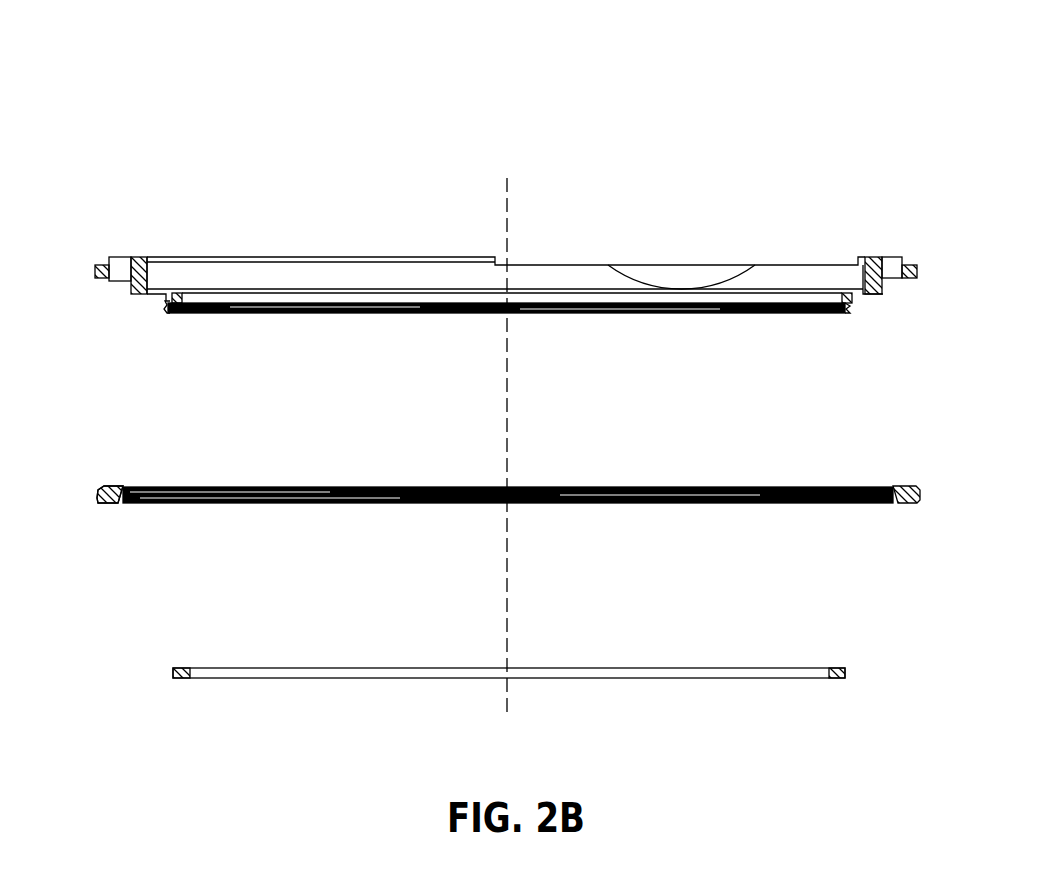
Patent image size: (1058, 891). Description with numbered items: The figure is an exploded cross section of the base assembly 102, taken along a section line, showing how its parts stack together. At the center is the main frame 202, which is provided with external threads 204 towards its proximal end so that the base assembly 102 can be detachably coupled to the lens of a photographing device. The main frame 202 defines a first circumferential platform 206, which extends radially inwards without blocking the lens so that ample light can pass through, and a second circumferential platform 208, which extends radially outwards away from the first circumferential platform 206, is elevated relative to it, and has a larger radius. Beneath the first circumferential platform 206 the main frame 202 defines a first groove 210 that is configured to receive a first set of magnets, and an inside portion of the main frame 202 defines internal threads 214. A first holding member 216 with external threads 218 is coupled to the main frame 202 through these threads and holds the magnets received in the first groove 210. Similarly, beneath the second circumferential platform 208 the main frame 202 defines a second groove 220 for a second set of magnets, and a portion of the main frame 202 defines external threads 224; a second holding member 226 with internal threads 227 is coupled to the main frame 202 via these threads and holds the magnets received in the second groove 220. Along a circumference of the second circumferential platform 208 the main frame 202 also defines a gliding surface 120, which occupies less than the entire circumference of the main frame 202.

The base assembly 102 is at (502, 393).
The gliding surface 120 is at (515, 242).
The main frame 202 is at (915, 277).
The external threads 204 is at (134, 348).
The first circumferential platform 206 is at (140, 238).
The second circumferential platform 208 is at (96, 241).
The first groove 210 is at (506, 346).
The internal threads 214 is at (812, 347).
The first holding member 216 is at (489, 718).
The external threads 218 is at (137, 704).
The second groove 220 is at (88, 311).
The external threads 224 is at (905, 348).
The second holding member 226 is at (470, 541).
The internal threads 227 is at (873, 533).